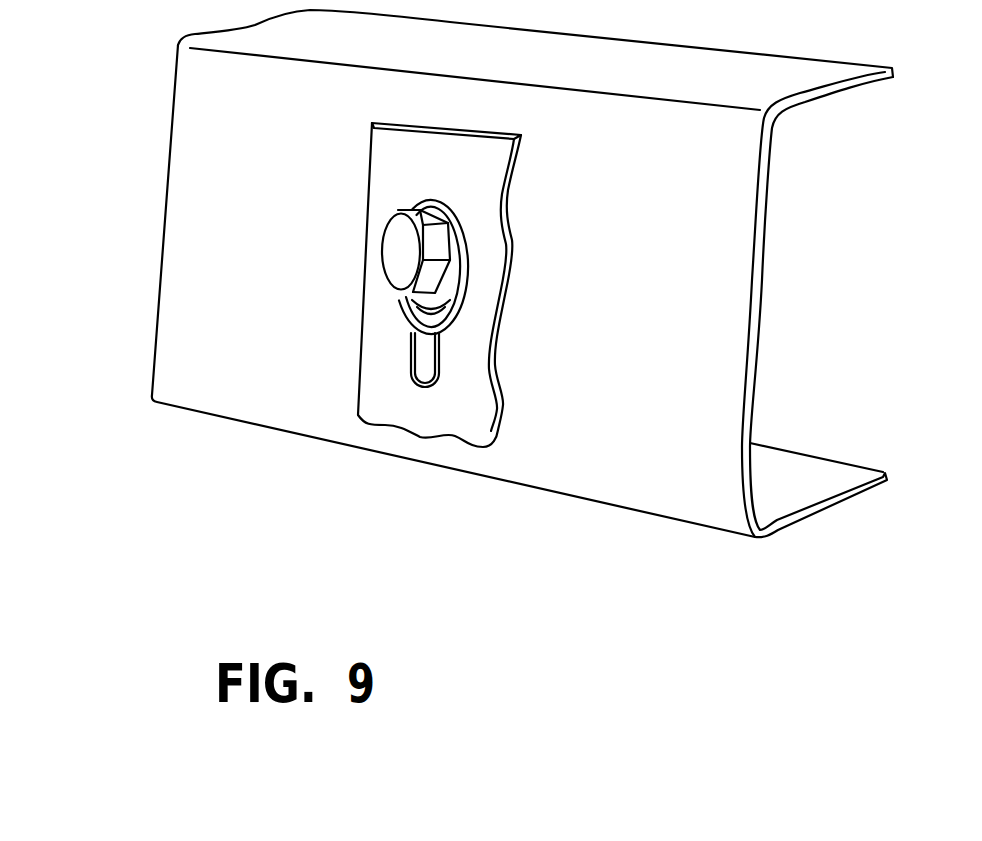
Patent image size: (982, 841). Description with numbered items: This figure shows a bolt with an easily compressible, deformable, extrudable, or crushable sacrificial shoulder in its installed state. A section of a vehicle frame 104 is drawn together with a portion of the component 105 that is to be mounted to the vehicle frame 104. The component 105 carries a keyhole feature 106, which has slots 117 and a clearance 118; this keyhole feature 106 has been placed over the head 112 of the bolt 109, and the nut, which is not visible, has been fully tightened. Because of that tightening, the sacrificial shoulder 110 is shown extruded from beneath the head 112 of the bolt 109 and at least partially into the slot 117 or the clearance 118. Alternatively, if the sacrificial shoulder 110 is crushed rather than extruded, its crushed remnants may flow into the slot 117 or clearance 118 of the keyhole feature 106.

The vehicle frame 104 is at (196, 138).
The component 105 is at (350, 283).
The keyhole feature 106 is at (392, 312).
The bolt 109 is at (372, 242).
The sacrificial shoulder 110 is at (438, 330).
The head 112 is at (446, 250).
The slots 117 is at (409, 371).
The clearance 118 is at (470, 315).